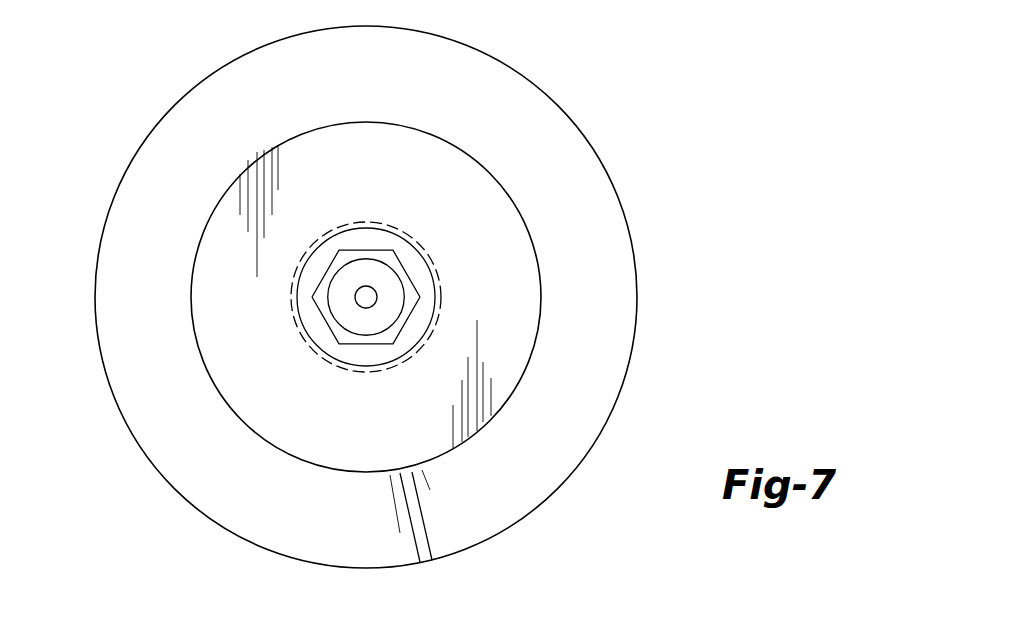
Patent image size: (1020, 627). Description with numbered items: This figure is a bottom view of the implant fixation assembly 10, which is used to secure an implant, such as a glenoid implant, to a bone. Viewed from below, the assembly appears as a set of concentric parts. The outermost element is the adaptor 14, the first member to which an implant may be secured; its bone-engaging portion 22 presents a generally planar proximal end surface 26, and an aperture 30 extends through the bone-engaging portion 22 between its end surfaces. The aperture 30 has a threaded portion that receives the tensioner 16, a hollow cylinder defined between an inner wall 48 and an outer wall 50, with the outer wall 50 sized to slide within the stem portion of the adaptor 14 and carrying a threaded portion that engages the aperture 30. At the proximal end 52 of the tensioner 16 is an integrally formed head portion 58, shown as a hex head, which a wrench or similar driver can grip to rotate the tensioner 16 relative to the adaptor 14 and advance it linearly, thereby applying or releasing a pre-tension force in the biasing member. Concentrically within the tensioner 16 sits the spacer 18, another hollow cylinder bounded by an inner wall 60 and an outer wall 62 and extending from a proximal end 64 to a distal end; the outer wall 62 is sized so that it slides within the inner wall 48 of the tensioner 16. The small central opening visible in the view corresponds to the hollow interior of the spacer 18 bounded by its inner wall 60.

The implant fixation assembly 10 is at (347, 297).
The adaptor 14 is at (118, 444).
The tensioner 16 is at (320, 337).
The spacer 18 is at (340, 313).
The bone-engaging portion 22 is at (124, 253).
The proximal end surface 26 is at (300, 427).
The aperture 30 is at (360, 224).
The inner wall 48 is at (398, 277).
The outer wall 50 is at (433, 324).
The proximal end 52 is at (410, 265).
The head portion 58 is at (380, 341).
The inner wall 60 is at (365, 309).
The outer wall 62 is at (402, 315).
The proximal end 64 is at (373, 273).